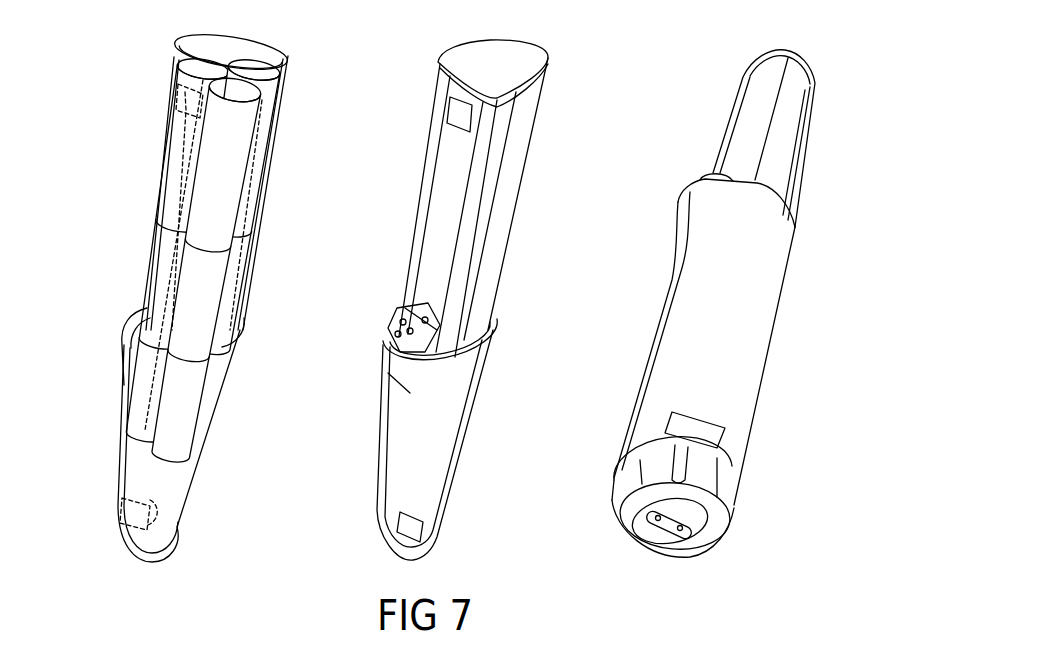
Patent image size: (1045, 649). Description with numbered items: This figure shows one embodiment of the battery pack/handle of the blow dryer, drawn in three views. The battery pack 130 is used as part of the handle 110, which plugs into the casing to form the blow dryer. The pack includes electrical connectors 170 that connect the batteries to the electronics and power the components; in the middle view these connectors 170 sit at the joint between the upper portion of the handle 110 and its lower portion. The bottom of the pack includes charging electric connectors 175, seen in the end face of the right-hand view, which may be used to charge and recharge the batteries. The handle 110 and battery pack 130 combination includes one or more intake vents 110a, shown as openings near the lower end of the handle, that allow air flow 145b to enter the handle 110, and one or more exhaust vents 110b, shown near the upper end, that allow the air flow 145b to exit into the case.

The handle 110 is at (125, 395).
The intake vents 110a is at (180, 88).
The exhaust vents 110b is at (448, 110).
The battery pack 130 is at (810, 146).
The air flow 145b is at (165, 100).
The electrical connectors 170 is at (395, 320).
The charging electric connectors 175 is at (676, 541).